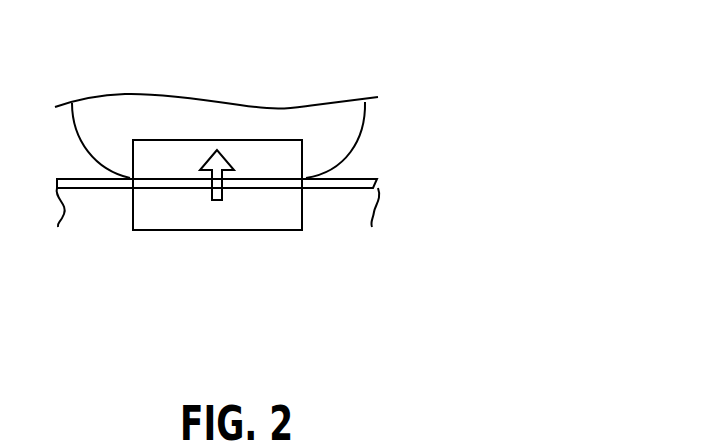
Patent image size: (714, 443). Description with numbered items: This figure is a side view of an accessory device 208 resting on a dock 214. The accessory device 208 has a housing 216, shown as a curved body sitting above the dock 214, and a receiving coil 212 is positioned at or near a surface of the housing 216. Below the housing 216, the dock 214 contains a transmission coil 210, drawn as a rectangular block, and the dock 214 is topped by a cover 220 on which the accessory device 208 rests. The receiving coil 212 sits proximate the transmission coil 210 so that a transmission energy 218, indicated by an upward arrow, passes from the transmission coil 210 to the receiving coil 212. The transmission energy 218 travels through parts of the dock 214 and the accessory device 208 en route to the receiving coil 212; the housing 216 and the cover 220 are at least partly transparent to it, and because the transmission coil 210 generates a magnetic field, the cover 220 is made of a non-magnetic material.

The accessory device 208 is at (390, 116).
The transmission coil 210 is at (287, 213).
The receiving coil 212 is at (268, 155).
The dock 214 is at (417, 224).
The housing 216 is at (353, 145).
The transmission energy 218 is at (219, 197).
The cover 220 is at (377, 186).